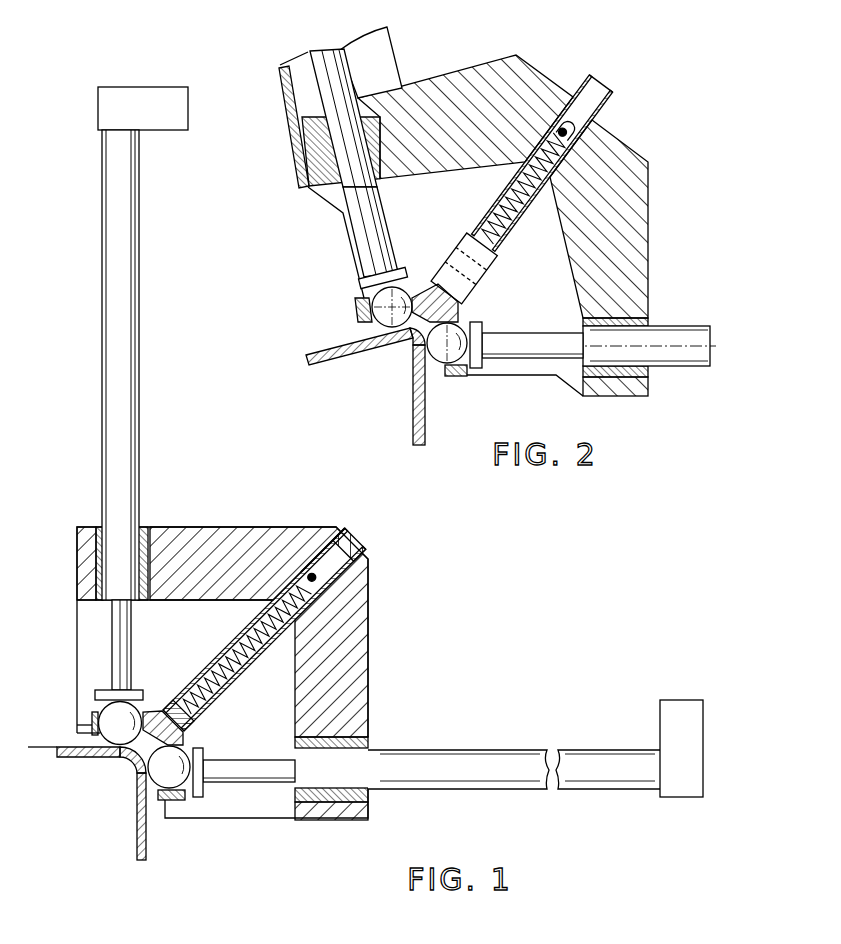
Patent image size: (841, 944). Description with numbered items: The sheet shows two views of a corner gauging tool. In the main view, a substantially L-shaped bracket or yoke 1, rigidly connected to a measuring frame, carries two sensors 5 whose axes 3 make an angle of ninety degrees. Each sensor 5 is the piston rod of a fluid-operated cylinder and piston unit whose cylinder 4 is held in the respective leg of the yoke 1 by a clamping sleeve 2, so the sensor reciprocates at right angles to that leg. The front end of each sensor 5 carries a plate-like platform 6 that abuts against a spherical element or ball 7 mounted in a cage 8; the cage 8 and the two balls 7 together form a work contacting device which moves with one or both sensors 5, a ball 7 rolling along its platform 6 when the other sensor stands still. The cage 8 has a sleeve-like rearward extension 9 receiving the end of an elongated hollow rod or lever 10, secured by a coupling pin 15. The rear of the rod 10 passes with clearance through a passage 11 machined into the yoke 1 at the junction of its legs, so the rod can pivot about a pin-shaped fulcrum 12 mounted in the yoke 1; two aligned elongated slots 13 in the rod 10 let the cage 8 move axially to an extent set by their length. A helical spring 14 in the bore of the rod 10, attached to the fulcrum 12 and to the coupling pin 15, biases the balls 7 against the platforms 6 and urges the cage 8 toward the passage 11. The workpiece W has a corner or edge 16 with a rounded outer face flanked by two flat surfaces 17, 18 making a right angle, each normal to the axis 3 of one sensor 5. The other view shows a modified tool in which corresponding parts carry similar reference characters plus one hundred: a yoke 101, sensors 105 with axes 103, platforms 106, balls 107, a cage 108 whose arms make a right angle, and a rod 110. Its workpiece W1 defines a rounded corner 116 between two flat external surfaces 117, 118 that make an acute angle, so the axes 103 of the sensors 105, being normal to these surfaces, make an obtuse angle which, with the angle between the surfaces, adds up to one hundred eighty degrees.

In FIG. 1, the yoke 1 is at (290, 540).
In FIG. 1, the clamping sleeve 2 is at (143, 527).
In FIG. 1, the axes 3 is at (130, 297).
In FIG. 1, the cylinder 4 is at (113, 512).
In FIG. 1, the sensor 5 is at (112, 617).
In FIG. 1, the platform 6 is at (100, 690).
In FIG. 1, the spherical element 7 is at (98, 720).
In FIG. 1, the cage 8 is at (190, 742).
In FIG. 1, the rearward extension 9 is at (186, 685).
In FIG. 1, the rod 10 is at (370, 560).
In FIG. 1, the passage 11 is at (345, 545).
In FIG. 1, the fulcrum 12 is at (316, 577).
In FIG. 1, the slots 13 is at (355, 548).
In FIG. 1, the helical spring 14 is at (350, 620).
In FIG. 1, the coupling pin 15 is at (205, 716).
In FIG. 1, the corner 16 is at (124, 768).
In FIG. 1, the surface 17 is at (76, 760).
In FIG. 1, the surface 18 is at (137, 835).
In FIG. 1, the workpiece W is at (100, 768).
In FIG. 2, the housing 101 is at (463, 211).
In FIG. 2, the axes 103 is at (321, 48).
In FIG. 2, the sensors 105 is at (367, 231).
In FIG. 2, the piston plate 106 is at (399, 273).
In FIG. 2, the ball 107 is at (390, 323).
In FIG. 2, the cage 108 is at (362, 304).
In FIG. 2, the spring tube 110 is at (606, 92).
In FIG. 2, the corner 116 is at (407, 338).
In FIG. 2, the surface 117 is at (323, 348).
In FIG. 2, the surface 118 is at (424, 434).
In FIG. 2, the workpiece W1 is at (410, 411).